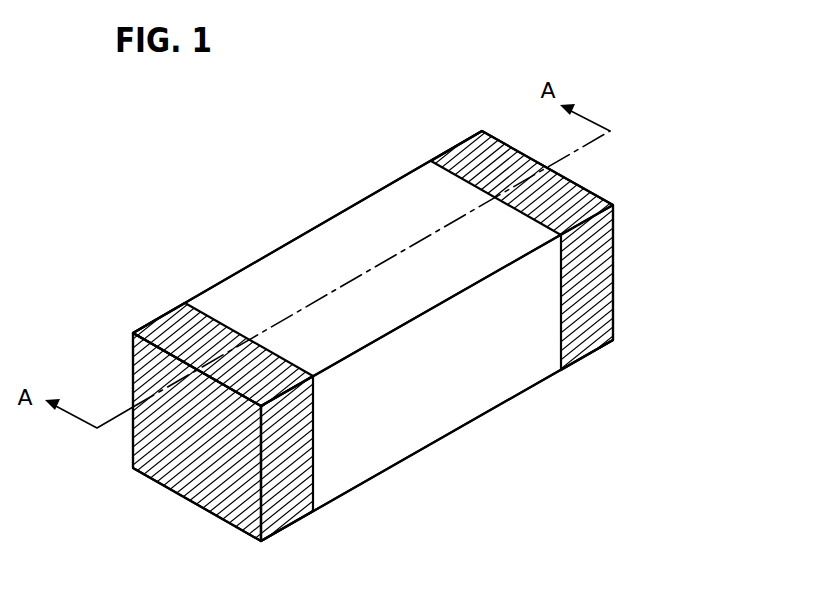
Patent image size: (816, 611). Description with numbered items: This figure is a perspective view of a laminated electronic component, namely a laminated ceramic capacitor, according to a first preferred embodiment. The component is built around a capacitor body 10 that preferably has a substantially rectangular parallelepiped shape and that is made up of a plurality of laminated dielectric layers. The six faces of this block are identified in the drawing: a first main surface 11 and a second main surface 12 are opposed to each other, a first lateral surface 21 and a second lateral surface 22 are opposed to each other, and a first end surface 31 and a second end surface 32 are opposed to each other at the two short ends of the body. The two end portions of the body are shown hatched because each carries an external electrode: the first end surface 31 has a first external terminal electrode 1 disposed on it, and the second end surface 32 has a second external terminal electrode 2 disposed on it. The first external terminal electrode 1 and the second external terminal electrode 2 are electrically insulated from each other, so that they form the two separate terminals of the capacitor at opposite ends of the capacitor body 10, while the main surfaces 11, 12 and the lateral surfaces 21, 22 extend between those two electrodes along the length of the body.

The first external terminal electrode 1 is at (420, 307).
The capacitor body 10 is at (373, 328).
The first main surface 11 is at (320, 226).
The second main surface 12 is at (375, 452).
The first lateral surface 21 is at (250, 280).
The second lateral surface 22 is at (447, 398).
The first end surface 31 is at (172, 490).
The second end surface 32 is at (615, 251).
The second external terminal electrode 2 is at (585, 260).